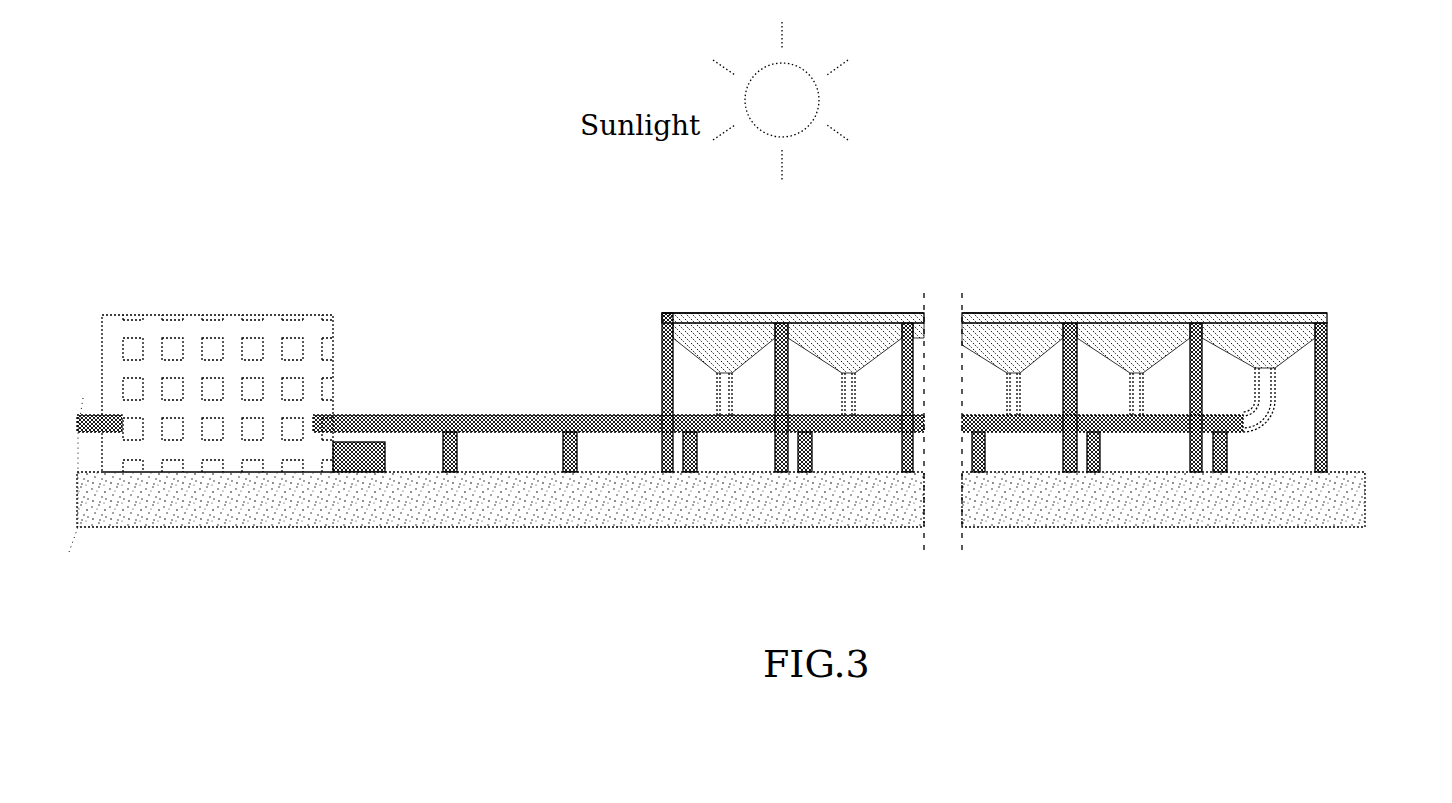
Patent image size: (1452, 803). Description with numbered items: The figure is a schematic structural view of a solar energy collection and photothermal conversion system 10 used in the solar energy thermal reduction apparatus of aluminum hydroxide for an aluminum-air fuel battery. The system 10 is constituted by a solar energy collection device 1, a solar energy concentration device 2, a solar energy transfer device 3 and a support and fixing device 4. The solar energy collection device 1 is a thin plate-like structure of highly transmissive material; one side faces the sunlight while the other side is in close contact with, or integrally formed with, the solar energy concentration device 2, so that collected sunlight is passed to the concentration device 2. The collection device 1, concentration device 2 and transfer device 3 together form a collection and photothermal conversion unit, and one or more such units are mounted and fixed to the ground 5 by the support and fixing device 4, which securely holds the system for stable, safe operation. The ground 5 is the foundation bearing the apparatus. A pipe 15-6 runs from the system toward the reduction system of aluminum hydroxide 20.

The solar energy collection device 1 is at (1312, 317).
The solar energy concentration device 2 is at (1298, 337).
The solar energy transfer device 3 is at (1268, 398).
The support and fixing device 4 is at (660, 362).
The ground 5 is at (1352, 477).
The solar energy collection and photothermal conversion system 10 is at (1268, 302).
The heat transfer pipe 15-6 is at (390, 413).
The reduction system of aluminum hydroxide 20 is at (150, 397).